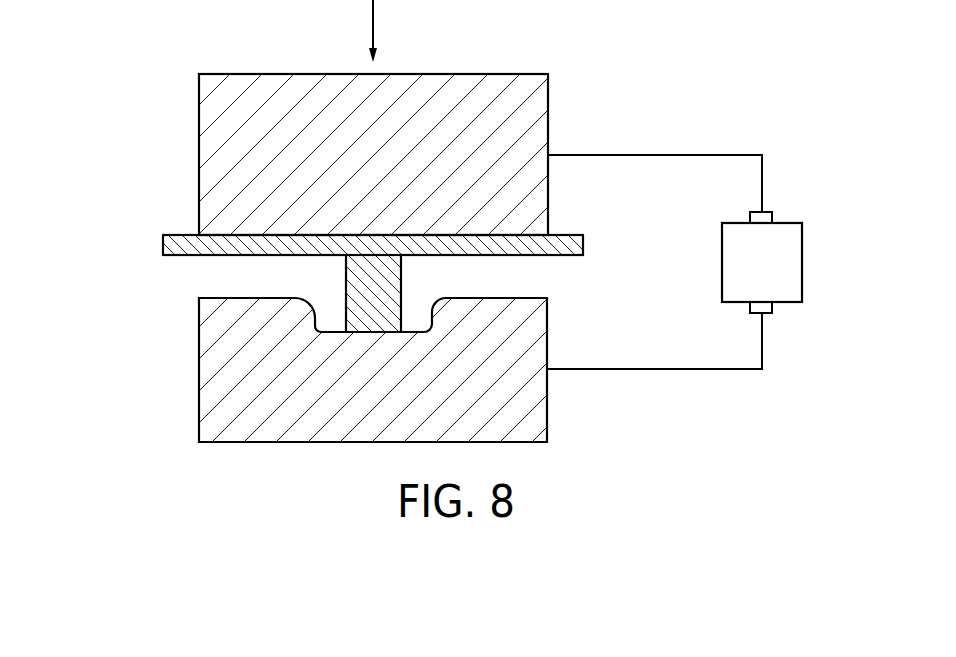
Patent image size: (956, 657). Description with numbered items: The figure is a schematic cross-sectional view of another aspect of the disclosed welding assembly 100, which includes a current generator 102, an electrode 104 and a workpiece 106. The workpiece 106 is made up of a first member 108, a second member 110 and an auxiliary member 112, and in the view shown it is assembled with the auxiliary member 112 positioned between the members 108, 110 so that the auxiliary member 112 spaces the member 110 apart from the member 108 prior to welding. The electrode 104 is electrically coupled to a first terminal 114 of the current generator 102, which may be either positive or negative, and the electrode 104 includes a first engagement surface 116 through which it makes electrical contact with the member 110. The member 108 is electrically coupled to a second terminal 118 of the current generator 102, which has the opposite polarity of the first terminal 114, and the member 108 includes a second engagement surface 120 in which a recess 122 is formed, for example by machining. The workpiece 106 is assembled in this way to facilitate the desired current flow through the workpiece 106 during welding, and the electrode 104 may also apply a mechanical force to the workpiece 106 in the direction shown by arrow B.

The welding assembly 100 is at (149, 99).
The current generator 102 is at (802, 262).
The electrode 104 is at (548, 93).
The workpiece 106 is at (149, 341).
The member 108 is at (547, 403).
The member 110 is at (583, 246).
The auxiliary member 112 is at (401, 271).
The first terminal 114 is at (772, 216).
The first engagement surface 116 is at (508, 236).
The second terminal 118 is at (772, 308).
The second engagement surface 120 is at (533, 297).
The recess 122 is at (320, 330).
The arrow B is at (373, 28).